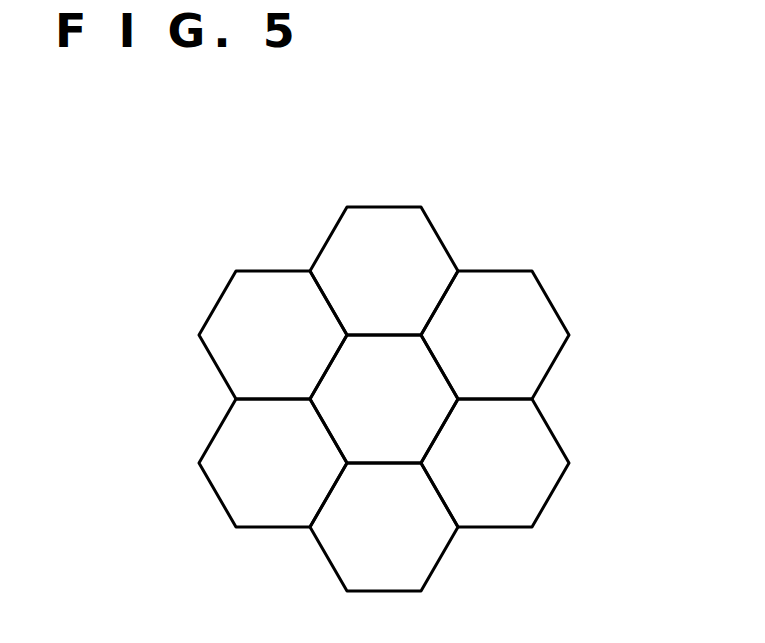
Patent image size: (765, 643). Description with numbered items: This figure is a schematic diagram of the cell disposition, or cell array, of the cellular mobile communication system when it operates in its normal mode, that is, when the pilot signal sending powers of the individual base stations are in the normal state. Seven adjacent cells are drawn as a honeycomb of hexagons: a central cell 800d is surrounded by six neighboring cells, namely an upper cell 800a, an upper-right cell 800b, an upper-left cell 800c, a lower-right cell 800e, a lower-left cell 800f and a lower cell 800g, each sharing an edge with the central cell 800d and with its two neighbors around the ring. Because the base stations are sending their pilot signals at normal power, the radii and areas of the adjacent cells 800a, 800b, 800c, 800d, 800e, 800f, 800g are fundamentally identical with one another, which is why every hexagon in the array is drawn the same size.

The cell 800a is at (404, 226).
The cell 800b is at (513, 287).
The cell 800c is at (262, 288).
The cell 800d is at (355, 432).
The cell 800e is at (533, 432).
The cell 800f is at (233, 445).
The cell 800g is at (437, 531).